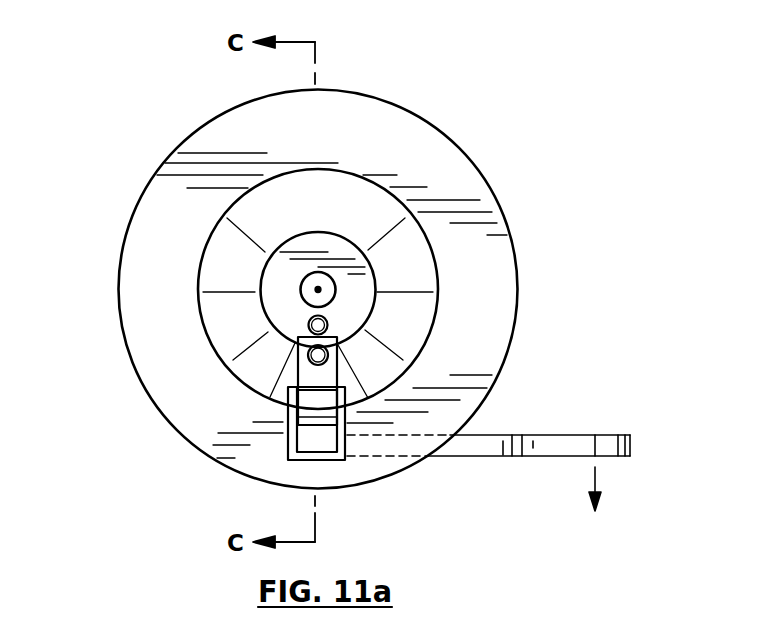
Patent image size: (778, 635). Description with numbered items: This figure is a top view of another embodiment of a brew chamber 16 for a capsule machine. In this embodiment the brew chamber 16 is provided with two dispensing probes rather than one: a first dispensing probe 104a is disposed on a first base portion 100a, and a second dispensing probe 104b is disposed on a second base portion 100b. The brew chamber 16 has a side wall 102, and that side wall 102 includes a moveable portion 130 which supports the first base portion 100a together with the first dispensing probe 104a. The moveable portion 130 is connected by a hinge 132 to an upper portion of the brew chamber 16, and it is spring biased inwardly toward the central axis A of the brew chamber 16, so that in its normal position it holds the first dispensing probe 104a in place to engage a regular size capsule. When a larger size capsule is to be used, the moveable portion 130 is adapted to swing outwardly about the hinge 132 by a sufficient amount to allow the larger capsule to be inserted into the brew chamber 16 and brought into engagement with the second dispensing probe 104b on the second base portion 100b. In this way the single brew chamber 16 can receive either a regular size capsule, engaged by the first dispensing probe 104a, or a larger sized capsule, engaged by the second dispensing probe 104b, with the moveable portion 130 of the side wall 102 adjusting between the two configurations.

The brew chamber 16 is at (551, 179).
The first base portion 100a is at (336, 380).
The second base portion 100b is at (342, 260).
The side wall 102 is at (418, 262).
The first dispensing probe 104a is at (328, 352).
The second dispensing probe 104b is at (328, 322).
The moveable portion 130 is at (310, 401).
The hinge 132 is at (308, 406).
The central axis A is at (318, 289).